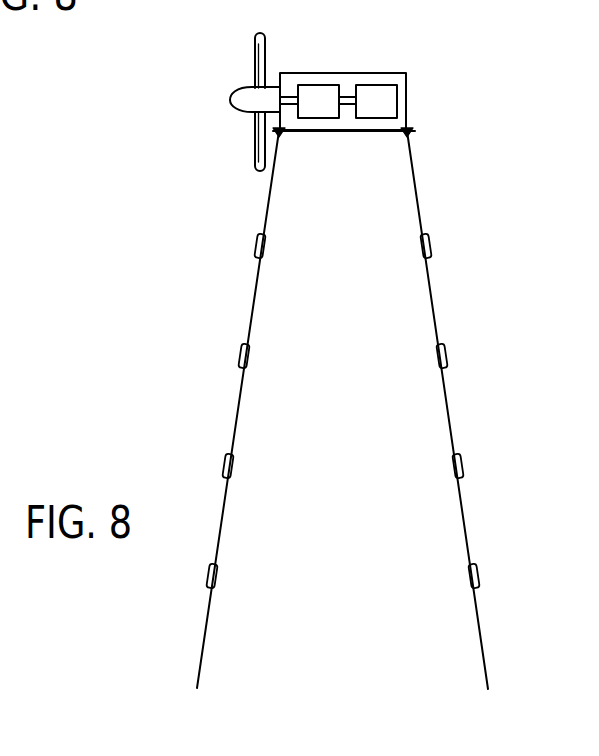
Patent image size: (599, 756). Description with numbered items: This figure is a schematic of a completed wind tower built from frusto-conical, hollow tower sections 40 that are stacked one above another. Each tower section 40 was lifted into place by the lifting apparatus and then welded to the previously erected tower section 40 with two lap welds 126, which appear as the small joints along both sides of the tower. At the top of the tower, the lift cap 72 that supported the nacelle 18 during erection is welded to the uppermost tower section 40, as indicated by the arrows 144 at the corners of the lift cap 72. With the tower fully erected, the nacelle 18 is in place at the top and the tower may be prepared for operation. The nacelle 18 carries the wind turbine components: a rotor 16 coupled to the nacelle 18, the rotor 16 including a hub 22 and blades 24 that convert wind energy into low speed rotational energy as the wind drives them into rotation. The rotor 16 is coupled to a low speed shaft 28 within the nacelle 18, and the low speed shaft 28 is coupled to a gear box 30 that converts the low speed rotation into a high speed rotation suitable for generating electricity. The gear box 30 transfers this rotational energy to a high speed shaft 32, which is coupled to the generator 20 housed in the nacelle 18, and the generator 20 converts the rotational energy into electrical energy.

The rotor 16 is at (220, 95).
The nacelle 18 is at (365, 67).
The generator 20 is at (398, 102).
The hub 22 is at (252, 108).
The blades 24 is at (256, 42).
The low speed shaft 28 is at (290, 92).
The gear box 30 is at (318, 85).
The high speed shaft 32 is at (347, 93).
The tower sections 40 is at (417, 200).
The lift cap 72 is at (345, 135).
The lap welds 126 is at (259, 250).
The arrows 144 is at (447, 193).